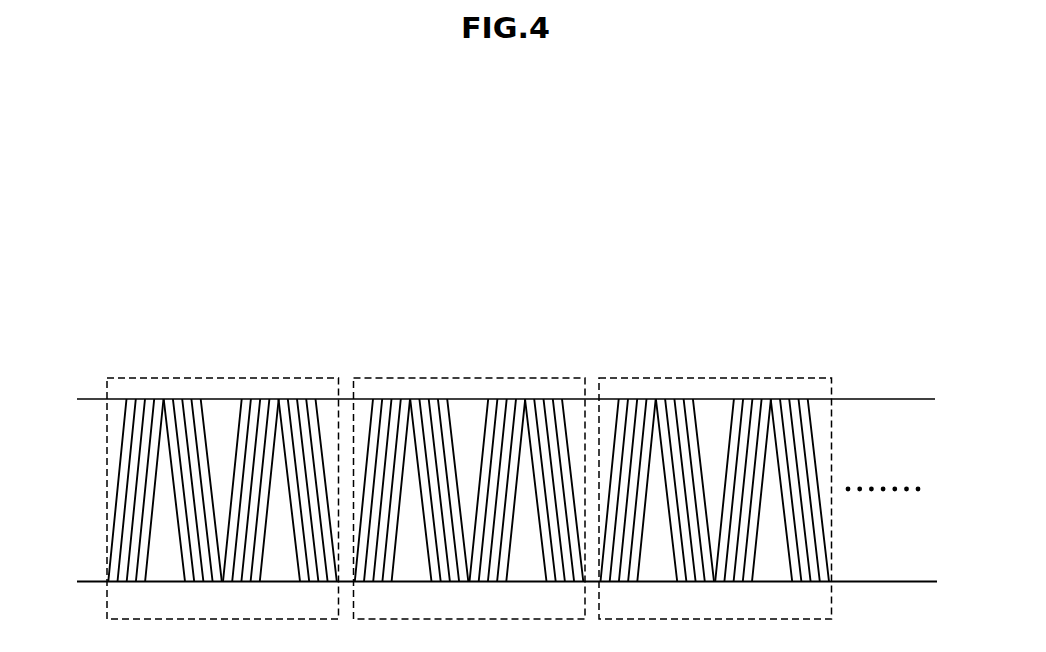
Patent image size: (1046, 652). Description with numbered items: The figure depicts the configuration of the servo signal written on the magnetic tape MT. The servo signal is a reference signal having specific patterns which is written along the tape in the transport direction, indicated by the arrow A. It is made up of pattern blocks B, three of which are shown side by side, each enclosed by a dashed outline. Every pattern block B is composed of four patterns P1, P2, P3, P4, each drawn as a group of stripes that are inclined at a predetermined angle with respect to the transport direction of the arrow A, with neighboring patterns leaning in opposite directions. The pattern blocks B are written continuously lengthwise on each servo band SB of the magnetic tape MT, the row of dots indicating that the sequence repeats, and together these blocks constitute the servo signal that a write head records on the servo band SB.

The magnetic tape MT is at (808, 358).
The servo band SB is at (873, 432).
The arrow A is at (405, 340).
The pattern block B is at (262, 378).
The pattern P1 is at (381, 507).
The pattern P2 is at (439, 507).
The pattern P3 is at (497, 507).
The pattern P4 is at (554, 507).